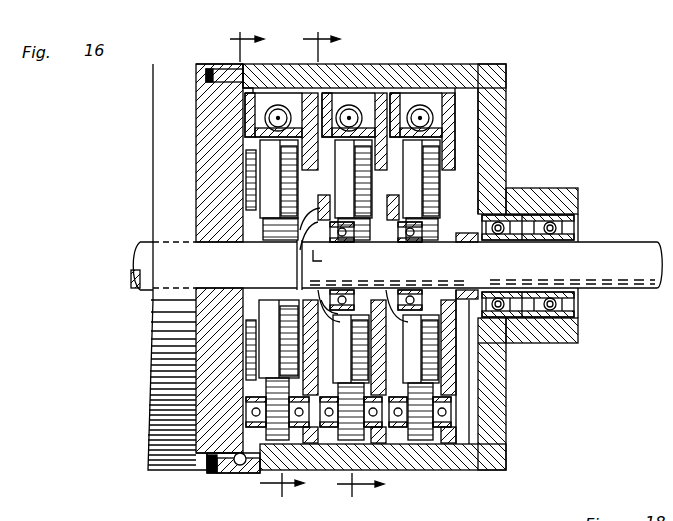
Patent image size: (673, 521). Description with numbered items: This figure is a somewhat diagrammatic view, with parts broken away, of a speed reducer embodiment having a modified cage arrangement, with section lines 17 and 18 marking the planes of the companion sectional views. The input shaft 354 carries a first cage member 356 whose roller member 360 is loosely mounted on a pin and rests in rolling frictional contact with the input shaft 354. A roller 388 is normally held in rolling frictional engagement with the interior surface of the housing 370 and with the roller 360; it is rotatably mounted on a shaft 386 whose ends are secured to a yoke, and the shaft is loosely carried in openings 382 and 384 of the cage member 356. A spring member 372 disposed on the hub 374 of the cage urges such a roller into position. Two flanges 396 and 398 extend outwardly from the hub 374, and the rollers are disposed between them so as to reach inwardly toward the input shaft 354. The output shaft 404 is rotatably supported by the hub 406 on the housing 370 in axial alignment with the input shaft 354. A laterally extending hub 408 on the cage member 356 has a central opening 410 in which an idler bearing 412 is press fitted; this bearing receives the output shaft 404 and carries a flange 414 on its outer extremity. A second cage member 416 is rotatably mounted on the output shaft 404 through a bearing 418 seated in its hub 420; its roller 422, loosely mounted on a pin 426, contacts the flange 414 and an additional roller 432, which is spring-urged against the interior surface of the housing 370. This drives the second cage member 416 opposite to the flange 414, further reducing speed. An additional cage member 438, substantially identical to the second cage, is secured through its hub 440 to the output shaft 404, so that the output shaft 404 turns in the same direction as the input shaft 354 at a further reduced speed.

The section line 17- 17 is at (267, 265).
The section line 18- 18 is at (343, 262).
The input shaft 354 is at (150, 262).
The cage member 356 is at (245, 136).
The roller member 360 is at (292, 340).
The housing 370 is at (477, 66).
The spring member 372 is at (278, 105).
The hub 374 is at (311, 92).
The opening 382 is at (245, 472).
The opening 384 is at (330, 437).
The shaft 386 is at (209, 470).
The roller 388 is at (274, 385).
The flange 396 is at (241, 68).
The flange 398 is at (333, 73).
The output shaft 404 is at (600, 260).
The hub 406 is at (566, 189).
The laterally extending hub 408 is at (346, 232).
The central opening 410 is at (296, 198).
The idler bearing 412 is at (300, 246).
The flange 414 is at (379, 275).
The second cage member 416 is at (384, 92).
The bearing 418 is at (508, 346).
The hub 420 is at (445, 342).
The roller 422 is at (419, 108).
The pin 426 is at (437, 150).
The roller 432 is at (388, 468).
The additional cage member 438 is at (458, 90).
The hub 440 is at (508, 190).